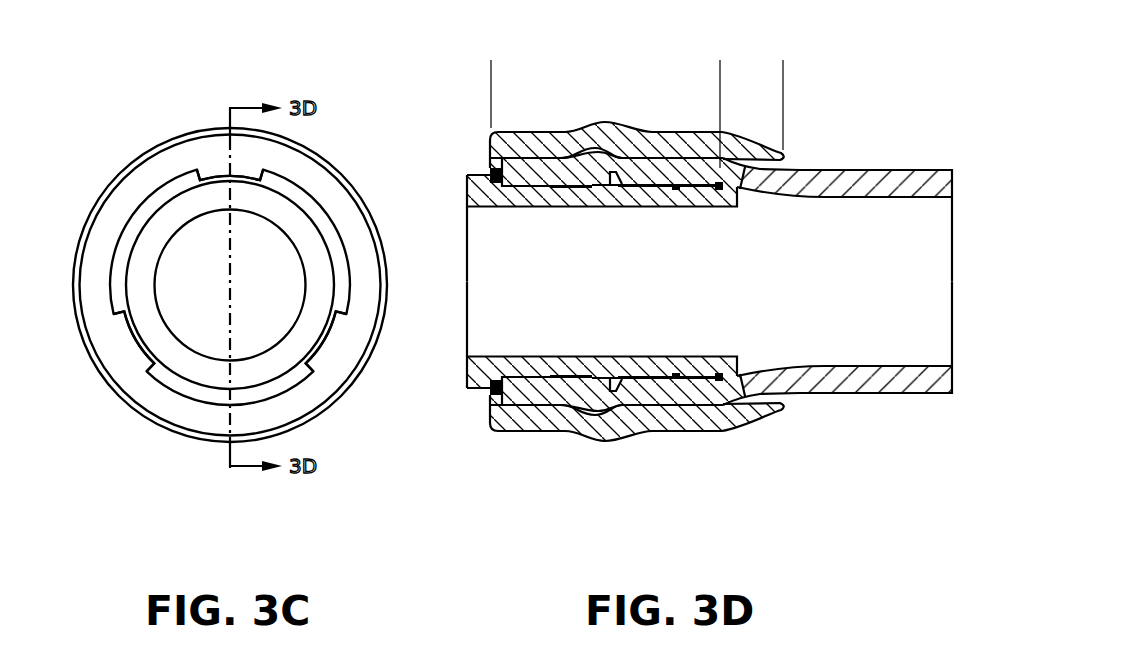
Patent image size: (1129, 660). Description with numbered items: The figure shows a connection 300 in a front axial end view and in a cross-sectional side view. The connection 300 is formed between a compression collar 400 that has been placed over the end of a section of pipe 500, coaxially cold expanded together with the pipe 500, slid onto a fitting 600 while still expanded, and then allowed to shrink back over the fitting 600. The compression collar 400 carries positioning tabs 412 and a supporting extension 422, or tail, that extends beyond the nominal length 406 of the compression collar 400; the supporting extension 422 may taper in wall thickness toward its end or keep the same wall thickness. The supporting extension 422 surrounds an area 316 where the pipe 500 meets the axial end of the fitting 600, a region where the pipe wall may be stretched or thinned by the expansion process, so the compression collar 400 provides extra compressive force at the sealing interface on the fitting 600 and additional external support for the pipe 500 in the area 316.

In FIG. 3C, the connection 300 is at (124, 145).
In FIG. 3D, the connection 300 is at (616, 454).
In FIG. 3D, the area 316 is at (766, 204).
In FIG. 3C, the compression collar 400 is at (147, 170).
In FIG. 3D, the compression collar 400 is at (558, 412).
In FIG. 3D, the nominal length 406 is at (491, 70).
In FIG. 3C, the positioning tabs 412 is at (212, 172).
In FIG. 3D, the positioning tabs 412 is at (492, 168).
In FIG. 3D, the supporting extension 422 is at (720, 70).
In FIG. 3C, the pipe 500 is at (290, 380).
In FIG. 3D, the pipe 500 is at (843, 384).
In FIG. 3C, the fitting 600 is at (192, 367).
In FIG. 3D, the fitting 600 is at (482, 374).